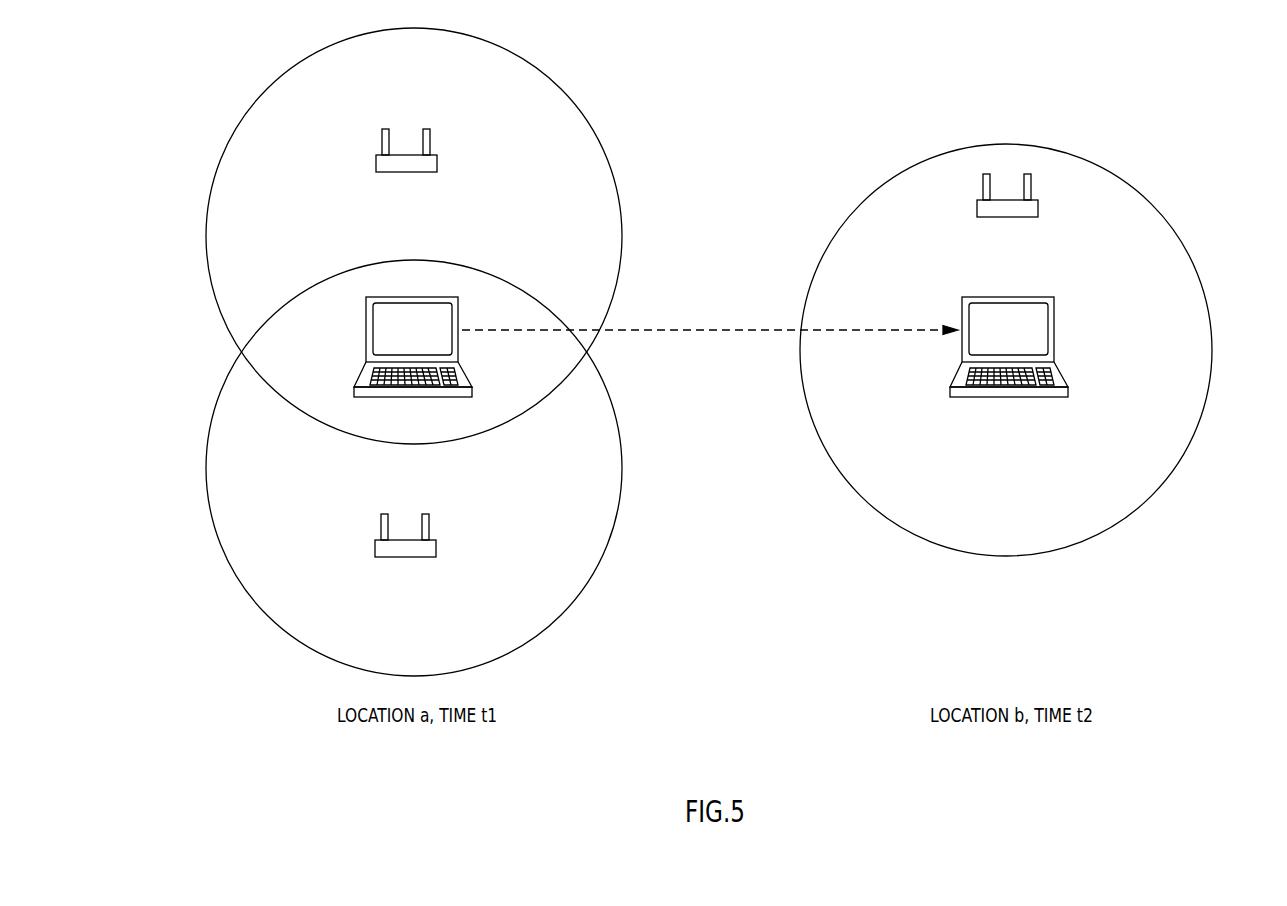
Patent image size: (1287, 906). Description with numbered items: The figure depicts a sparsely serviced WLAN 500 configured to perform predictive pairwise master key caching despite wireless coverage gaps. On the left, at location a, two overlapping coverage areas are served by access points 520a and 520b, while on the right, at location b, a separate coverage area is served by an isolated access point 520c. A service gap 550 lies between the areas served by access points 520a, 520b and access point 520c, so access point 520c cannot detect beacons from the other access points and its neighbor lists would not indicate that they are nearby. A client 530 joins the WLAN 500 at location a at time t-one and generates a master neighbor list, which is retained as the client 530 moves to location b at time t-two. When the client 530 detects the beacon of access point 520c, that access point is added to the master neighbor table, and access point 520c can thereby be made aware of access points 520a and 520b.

The sparsely serviced WLAN 500 is at (124, 60).
The access point 520a is at (386, 172).
The access point 520b is at (386, 556).
The access point 520c is at (988, 217).
The client 530 is at (366, 330).
The service gap 550 is at (800, 68).